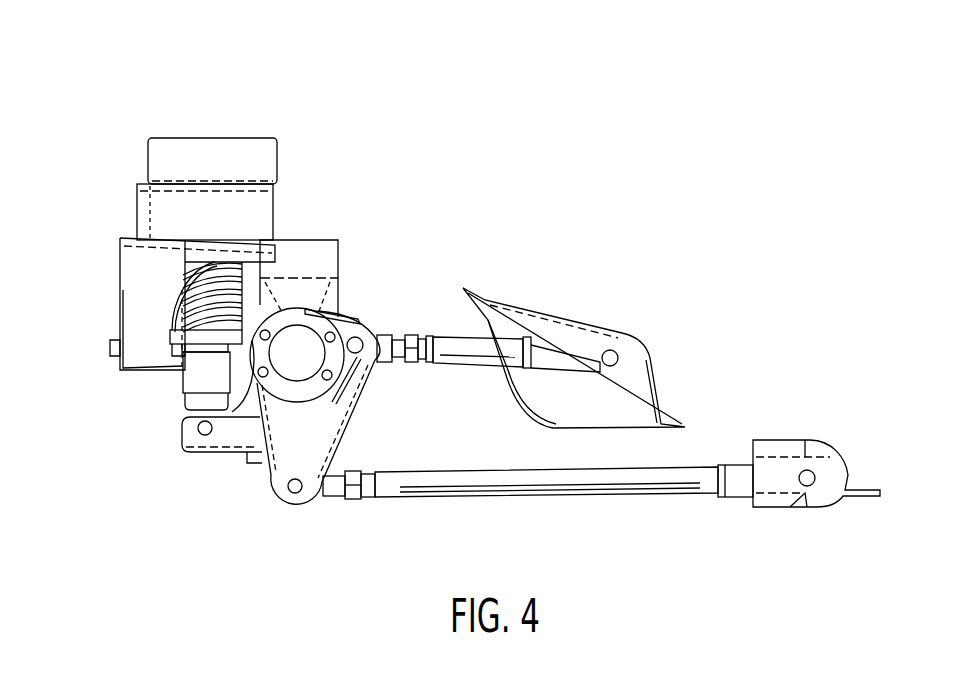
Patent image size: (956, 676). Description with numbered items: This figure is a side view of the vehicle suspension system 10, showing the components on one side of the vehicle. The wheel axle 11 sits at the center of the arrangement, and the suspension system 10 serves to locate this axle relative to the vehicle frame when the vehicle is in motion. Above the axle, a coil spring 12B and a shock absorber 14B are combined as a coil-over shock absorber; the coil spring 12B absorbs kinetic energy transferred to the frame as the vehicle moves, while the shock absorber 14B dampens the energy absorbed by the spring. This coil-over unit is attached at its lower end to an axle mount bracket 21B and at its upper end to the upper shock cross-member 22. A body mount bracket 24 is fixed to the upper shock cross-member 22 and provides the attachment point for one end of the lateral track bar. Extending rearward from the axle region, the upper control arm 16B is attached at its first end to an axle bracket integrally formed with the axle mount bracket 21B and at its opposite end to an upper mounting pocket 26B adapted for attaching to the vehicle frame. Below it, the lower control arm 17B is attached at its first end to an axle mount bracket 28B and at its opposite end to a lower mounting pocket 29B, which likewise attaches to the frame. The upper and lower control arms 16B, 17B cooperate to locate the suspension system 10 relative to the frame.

The suspension system 10 is at (83, 128).
The upper shock cross-member 22 is at (237, 150).
The coil spring 12B is at (172, 310).
The body mount bracket 24 is at (138, 343).
The shock absorber 14B is at (185, 383).
The axle mount bracket 21B is at (182, 433).
The wheel axle 11 is at (267, 447).
The axle mount bracket 28B is at (285, 455).
The upper control arm 16B is at (450, 333).
The upper mounting pocket 26B is at (545, 325).
The lower control arm 17B is at (482, 483).
The lower mounting pocket 29B is at (823, 438).